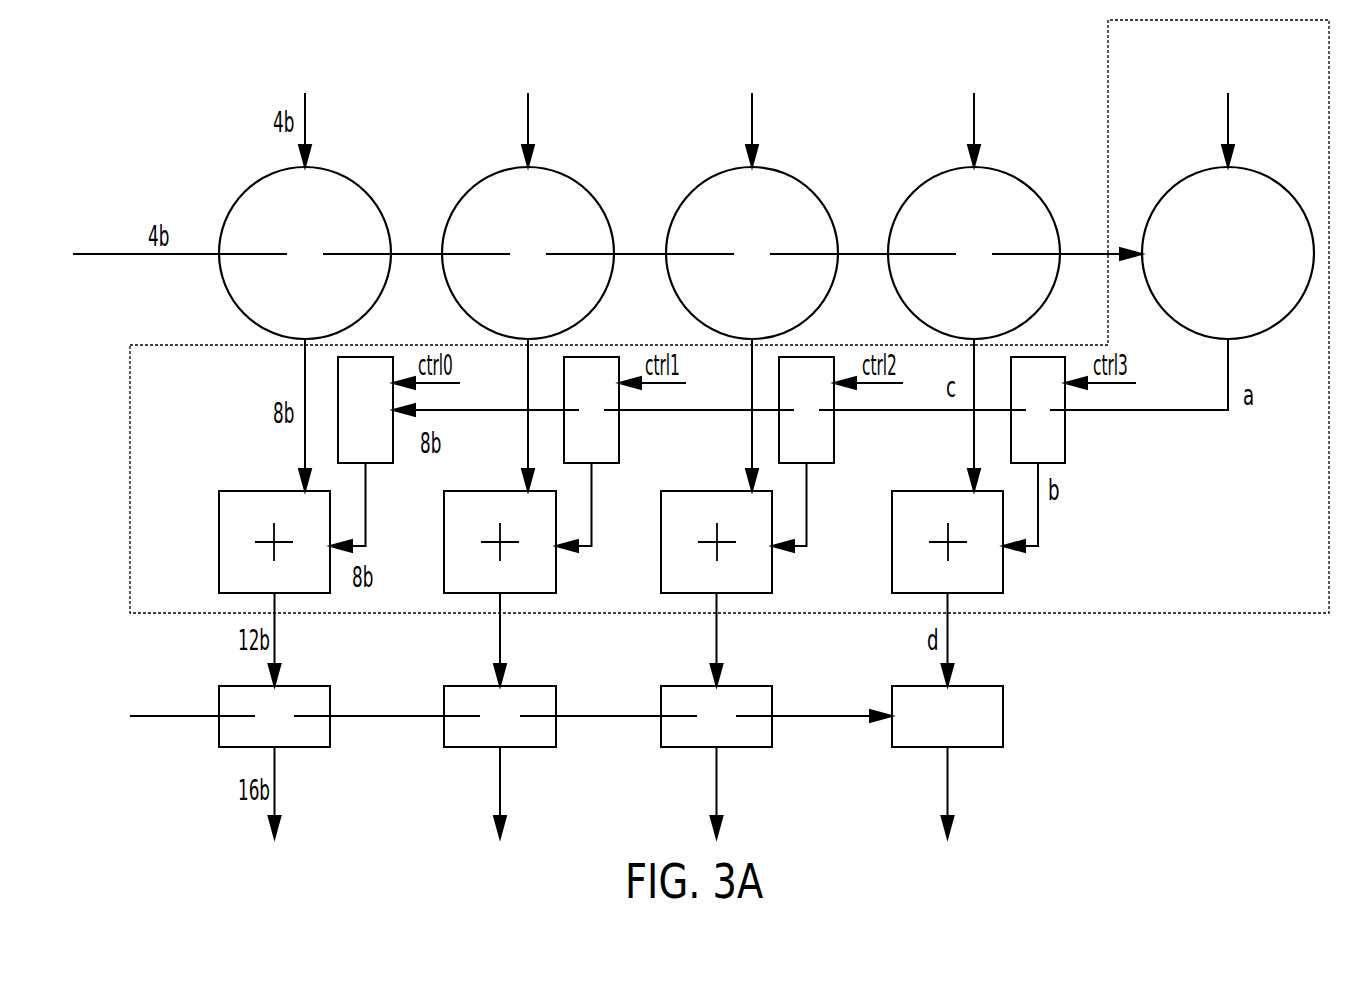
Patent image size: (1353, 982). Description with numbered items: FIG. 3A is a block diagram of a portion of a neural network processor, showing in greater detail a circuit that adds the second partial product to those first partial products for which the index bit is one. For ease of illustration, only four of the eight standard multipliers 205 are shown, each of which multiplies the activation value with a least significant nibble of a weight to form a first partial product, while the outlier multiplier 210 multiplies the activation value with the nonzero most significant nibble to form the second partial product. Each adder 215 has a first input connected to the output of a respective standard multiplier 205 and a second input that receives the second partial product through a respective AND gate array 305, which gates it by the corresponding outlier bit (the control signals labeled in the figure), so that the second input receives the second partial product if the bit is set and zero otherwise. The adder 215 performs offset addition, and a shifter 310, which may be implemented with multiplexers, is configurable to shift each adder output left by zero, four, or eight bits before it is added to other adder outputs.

The standard multiplier 205 is at (1034, 137).
The outlier multiplier 210 is at (1270, 172).
The AND gate array 305 is at (1089, 315).
The adder 215 is at (995, 633).
The shifter 310 is at (1008, 784).